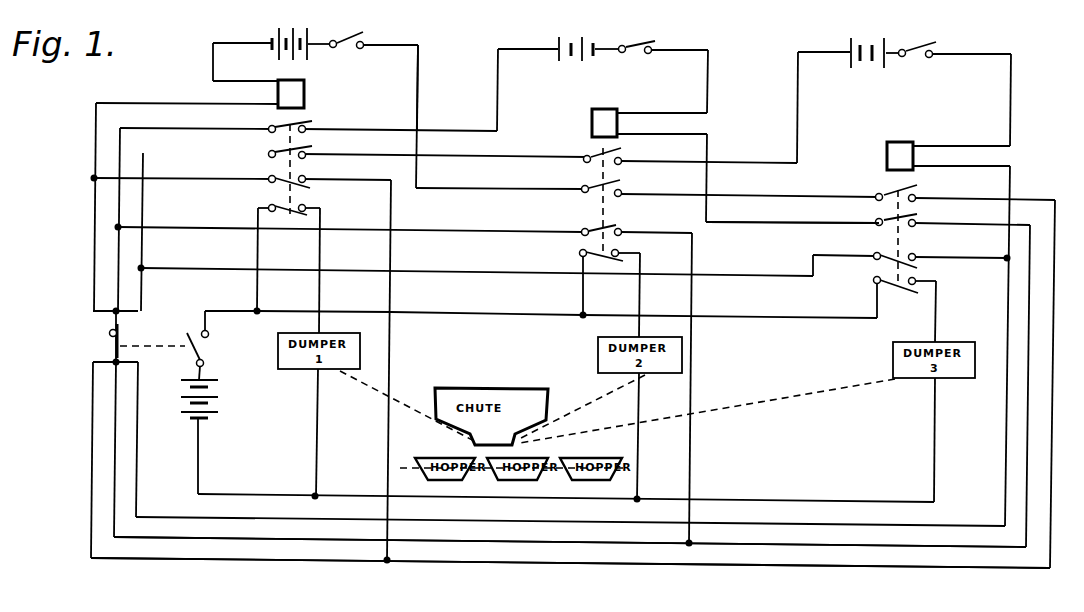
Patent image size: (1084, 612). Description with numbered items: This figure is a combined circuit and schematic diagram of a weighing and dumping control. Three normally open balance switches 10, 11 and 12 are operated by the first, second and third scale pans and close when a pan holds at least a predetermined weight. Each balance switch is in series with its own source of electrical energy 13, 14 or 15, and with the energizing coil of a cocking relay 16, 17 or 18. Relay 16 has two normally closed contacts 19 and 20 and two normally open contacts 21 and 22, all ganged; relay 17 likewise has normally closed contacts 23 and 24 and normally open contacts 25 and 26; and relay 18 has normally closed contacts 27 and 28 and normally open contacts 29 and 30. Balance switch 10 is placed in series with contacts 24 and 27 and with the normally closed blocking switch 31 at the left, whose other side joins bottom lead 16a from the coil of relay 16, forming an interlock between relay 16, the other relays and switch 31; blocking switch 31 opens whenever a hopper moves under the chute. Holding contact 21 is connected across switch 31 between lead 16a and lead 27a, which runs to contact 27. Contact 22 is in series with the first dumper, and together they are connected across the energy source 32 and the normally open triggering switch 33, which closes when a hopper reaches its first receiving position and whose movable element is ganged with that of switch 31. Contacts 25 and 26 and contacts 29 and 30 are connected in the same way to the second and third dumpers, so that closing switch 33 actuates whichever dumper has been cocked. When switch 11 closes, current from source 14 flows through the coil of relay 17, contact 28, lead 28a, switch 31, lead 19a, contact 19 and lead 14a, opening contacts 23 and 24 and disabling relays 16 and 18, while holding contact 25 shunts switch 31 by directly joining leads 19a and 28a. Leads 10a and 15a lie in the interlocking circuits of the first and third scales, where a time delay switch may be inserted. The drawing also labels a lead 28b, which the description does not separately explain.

The balance switch 10 is at (361, 49).
The balance switch 11 is at (648, 54).
The balance switch 12 is at (928, 58).
The source of electrical energy 13 is at (298, 30).
The source of electrical energy 14 is at (558, 38).
The source of electrical energy 15 is at (851, 43).
The cocking relay 16 is at (305, 93).
The cocking relay 17 is at (591, 120).
The cocking relay 18 is at (886, 154).
The bottom lead 16a is at (155, 103).
The lead 19a is at (150, 128).
The lead 10a is at (418, 97).
The lead 14a is at (497, 110).
The lead 15a is at (797, 106).
The normally closed contact 19 is at (304, 133).
The normally closed contact 20 is at (304, 158).
The normally open contact 21 is at (304, 184).
The normally open contact 22 is at (300, 214).
The normally closed contact 23 is at (620, 165).
The normally closed contact 24 is at (620, 197).
The normally open contact 25 is at (620, 236).
The normally open contact 26 is at (622, 261).
The normally closed contact 27 is at (914, 202).
The normally closed contact 28 is at (914, 227).
The normally open contact 29 is at (916, 261).
The normally open contact 30 is at (917, 297).
The conductor 28b is at (775, 222).
The lead 28a is at (616, 545).
The lead 27a is at (460, 563).
The blocking switch 31 is at (109, 334).
The source of electrical energy 32 is at (218, 400).
The triggering switch 33 is at (209, 334).